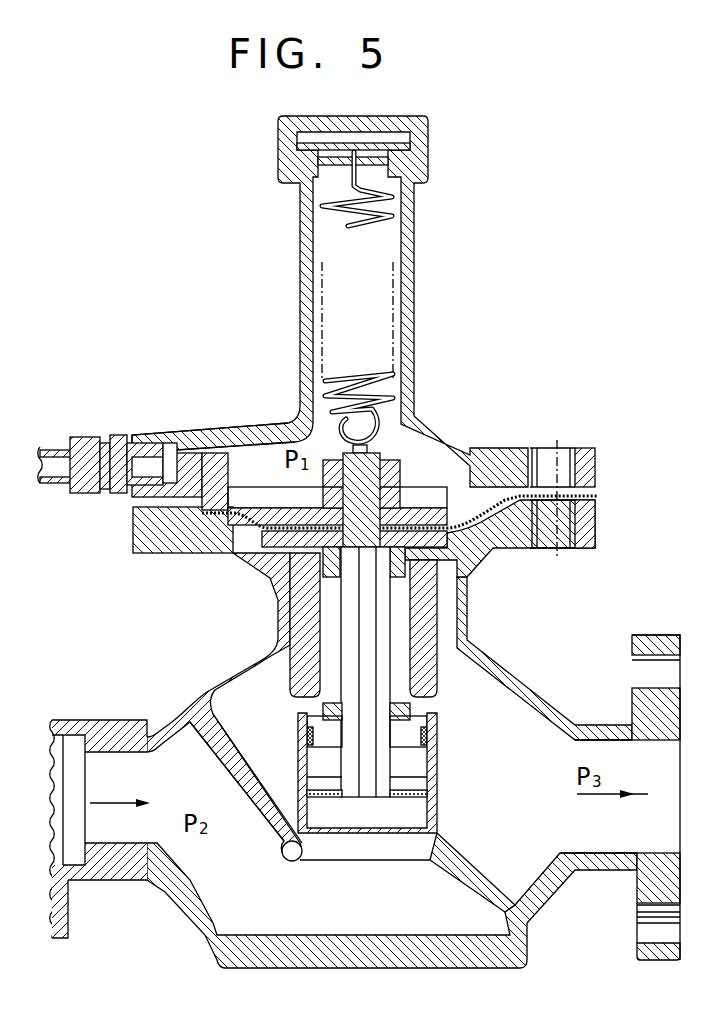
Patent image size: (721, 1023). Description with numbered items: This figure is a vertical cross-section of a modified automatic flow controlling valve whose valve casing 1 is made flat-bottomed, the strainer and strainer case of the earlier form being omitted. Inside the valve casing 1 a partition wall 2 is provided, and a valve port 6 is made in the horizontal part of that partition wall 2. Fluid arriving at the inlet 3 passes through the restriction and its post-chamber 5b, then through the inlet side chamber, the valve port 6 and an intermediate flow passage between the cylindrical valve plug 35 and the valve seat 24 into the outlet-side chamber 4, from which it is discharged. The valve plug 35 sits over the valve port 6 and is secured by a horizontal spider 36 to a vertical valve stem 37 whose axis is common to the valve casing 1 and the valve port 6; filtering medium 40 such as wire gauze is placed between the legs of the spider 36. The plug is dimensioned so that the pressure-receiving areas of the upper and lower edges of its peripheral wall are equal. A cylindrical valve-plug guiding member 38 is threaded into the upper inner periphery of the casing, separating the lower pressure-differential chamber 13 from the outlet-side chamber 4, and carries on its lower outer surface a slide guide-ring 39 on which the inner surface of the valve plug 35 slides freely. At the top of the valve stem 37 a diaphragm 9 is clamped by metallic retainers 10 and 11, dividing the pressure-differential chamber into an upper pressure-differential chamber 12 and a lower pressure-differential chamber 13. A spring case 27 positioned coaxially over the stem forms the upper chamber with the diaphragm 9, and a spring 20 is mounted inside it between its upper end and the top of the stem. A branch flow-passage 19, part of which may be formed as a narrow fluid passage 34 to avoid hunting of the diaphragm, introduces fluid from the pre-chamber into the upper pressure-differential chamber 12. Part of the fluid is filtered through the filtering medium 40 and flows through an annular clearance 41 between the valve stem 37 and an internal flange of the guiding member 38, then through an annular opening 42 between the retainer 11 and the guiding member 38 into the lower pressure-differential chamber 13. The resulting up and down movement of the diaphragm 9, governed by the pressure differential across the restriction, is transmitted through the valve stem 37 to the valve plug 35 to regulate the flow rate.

The valve casing 1 is at (221, 672).
The partition wall 2 is at (262, 823).
The inlet 3 is at (129, 763).
The outlet-side chamber 4 is at (572, 726).
The post-chamber 5b is at (120, 827).
The valve port 6 is at (370, 853).
The diaphragm 9 is at (460, 518).
The metallic retainer 10 is at (418, 505).
The metallic retainer 11 is at (470, 556).
The upper pressure-differential chamber 12 is at (273, 460).
The lower pressure-differential chamber 13 is at (270, 548).
The branch flow-passage 19 is at (114, 462).
The spring 20 is at (300, 235).
The valve seat 24 is at (287, 852).
The spring case 27 is at (396, 218).
The narrow fluid passage 34 is at (203, 445).
The cylindrical valve plug 35 is at (300, 772).
The horizontal spider 36 is at (417, 840).
The vertical valve stem 37 is at (385, 652).
The valve-plug guiding member 38 is at (427, 673).
The slide guide-ring 39 is at (433, 735).
The filtering medium 40 is at (327, 837).
The annular clearance 41 is at (322, 710).
The annular opening 42 is at (462, 600).